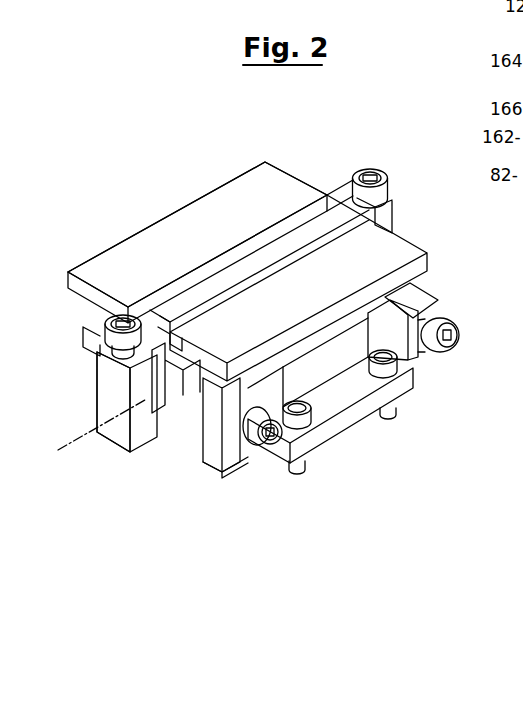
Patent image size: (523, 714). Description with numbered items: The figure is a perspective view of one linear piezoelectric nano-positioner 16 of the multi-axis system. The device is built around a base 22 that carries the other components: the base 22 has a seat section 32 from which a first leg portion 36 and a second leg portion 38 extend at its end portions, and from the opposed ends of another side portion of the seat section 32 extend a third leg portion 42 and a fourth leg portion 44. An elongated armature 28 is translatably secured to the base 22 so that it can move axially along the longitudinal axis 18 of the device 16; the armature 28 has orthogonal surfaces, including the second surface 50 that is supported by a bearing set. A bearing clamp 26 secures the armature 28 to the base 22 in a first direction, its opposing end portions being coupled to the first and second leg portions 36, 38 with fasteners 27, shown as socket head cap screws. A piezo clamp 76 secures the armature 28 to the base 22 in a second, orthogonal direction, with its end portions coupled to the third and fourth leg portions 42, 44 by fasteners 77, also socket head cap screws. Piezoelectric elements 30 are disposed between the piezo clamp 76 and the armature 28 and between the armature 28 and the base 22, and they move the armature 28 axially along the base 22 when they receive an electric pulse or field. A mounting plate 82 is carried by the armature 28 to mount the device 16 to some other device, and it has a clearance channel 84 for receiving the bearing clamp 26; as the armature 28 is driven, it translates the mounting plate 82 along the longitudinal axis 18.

The linear piezoelectric nano-positioner 16 is at (221, 138).
The longitudinal axis 18 is at (77, 435).
The base 22 is at (122, 450).
The bearing clamp 26 is at (342, 188).
The fasteners 27 is at (384, 170).
The armature 28 is at (180, 402).
The piezoelectric elements 30 is at (212, 392).
The seat section 32 is at (228, 478).
The first leg portion 36 is at (94, 383).
The second leg portion 38 is at (400, 224).
The third leg portion 42 is at (242, 468).
The fourth leg portion 44 is at (444, 366).
The second surface 50 is at (168, 350).
The piezo clamp 76 is at (341, 385).
The fasteners 77 is at (270, 450).
The mounting plate 82 is at (200, 193).
The clearance channel 84 is at (328, 195).